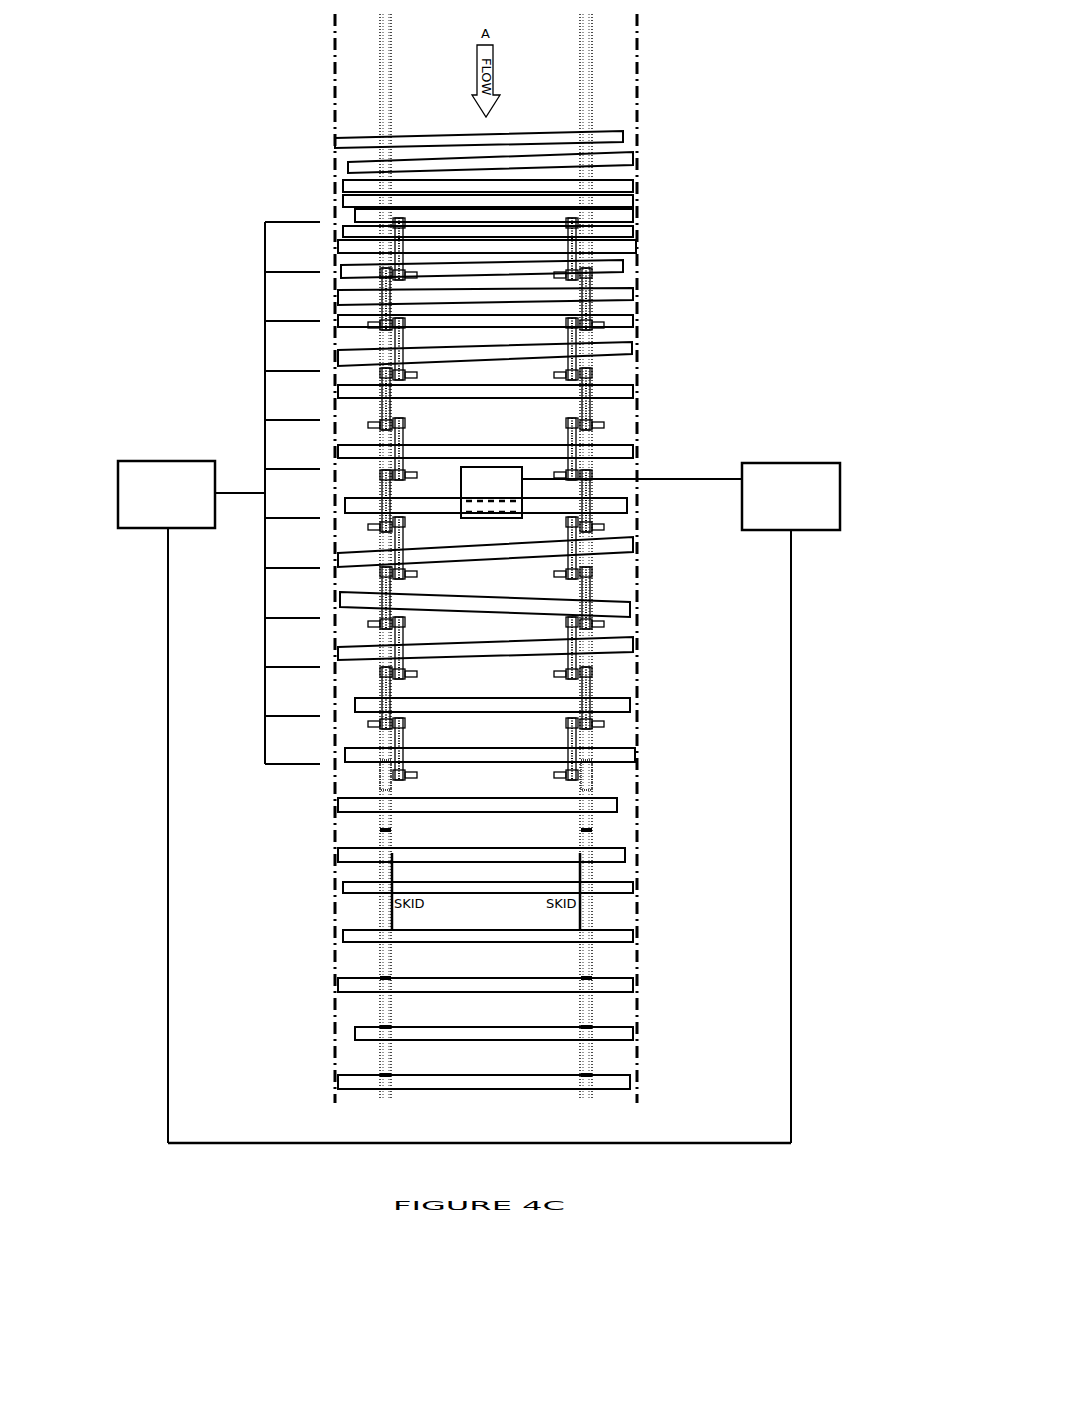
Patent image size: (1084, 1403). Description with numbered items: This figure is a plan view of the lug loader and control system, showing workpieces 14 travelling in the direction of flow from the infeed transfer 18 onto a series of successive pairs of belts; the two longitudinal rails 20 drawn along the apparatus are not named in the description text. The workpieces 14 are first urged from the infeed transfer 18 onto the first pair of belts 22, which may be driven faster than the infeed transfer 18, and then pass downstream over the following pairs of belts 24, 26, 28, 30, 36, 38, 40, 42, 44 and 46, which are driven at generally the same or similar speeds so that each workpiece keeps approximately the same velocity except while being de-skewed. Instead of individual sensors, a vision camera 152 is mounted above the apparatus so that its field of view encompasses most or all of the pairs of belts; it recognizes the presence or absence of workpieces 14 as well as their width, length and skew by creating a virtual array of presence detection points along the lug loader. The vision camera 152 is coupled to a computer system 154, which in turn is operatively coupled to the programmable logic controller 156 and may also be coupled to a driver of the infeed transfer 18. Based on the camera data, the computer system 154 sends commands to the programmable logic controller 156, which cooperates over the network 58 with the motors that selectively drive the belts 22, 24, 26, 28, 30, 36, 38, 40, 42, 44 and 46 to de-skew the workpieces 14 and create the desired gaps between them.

The workpieces 14 is at (637, 135).
The infeed transfer 18 is at (639, 107).
The support rod 20 is at (401, 104).
The first pair of belts 22 is at (404, 252).
The belts 24 is at (381, 307).
The belts 26 is at (404, 340).
The belts 28 is at (381, 410).
The belts 30 is at (404, 437).
The belts 36 is at (381, 487).
The belts 38 is at (404, 539).
The belts 40 is at (381, 587).
The belts 42 is at (404, 640).
The belts 44 is at (381, 685).
The belts 46 is at (404, 735).
The network 58 is at (712, 1142).
The vision camera 152 is at (601, 492).
The computer system 154 is at (791, 803).
The programmable logic controller 156 is at (191, 802).